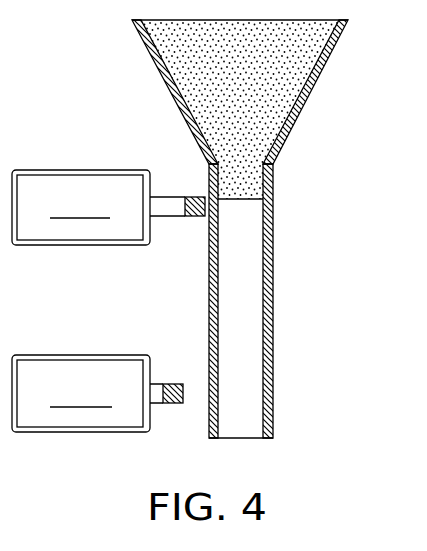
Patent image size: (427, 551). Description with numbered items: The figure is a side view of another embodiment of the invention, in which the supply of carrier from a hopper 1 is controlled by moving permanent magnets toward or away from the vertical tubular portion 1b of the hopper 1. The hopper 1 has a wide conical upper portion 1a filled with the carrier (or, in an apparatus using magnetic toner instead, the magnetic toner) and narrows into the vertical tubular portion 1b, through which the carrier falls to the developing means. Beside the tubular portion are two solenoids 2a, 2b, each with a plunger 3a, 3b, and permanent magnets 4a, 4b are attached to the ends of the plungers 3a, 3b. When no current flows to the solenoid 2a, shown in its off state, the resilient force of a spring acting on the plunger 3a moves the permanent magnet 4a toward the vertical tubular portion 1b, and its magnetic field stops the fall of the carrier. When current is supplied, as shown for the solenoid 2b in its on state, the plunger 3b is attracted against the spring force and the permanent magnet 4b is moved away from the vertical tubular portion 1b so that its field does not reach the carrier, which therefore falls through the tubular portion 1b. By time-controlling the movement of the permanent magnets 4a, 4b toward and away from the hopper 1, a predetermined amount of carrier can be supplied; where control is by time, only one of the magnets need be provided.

The hopper 1 is at (155, 79).
The conical upper portion of container 1a is at (330, 58).
The vertical tubular portion 1b is at (273, 280).
The solenoid 2a is at (83, 170).
The plunger 3a is at (163, 201).
The permanent magnet 4a is at (196, 216).
The solenoid 2b is at (87, 355).
The plunger 3b is at (157, 385).
The permanent magnet 4b is at (175, 404).